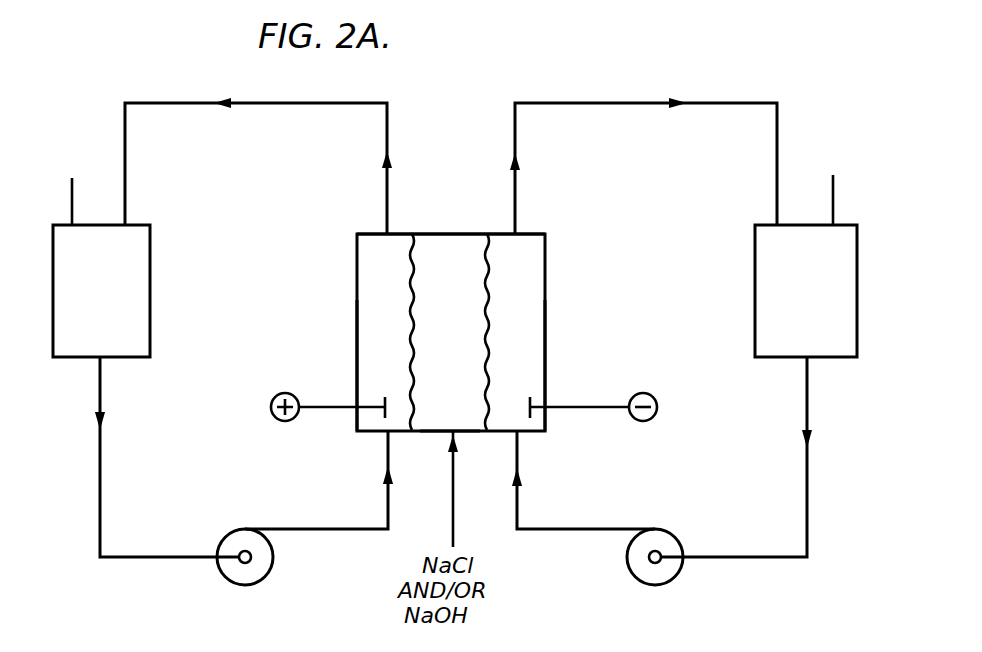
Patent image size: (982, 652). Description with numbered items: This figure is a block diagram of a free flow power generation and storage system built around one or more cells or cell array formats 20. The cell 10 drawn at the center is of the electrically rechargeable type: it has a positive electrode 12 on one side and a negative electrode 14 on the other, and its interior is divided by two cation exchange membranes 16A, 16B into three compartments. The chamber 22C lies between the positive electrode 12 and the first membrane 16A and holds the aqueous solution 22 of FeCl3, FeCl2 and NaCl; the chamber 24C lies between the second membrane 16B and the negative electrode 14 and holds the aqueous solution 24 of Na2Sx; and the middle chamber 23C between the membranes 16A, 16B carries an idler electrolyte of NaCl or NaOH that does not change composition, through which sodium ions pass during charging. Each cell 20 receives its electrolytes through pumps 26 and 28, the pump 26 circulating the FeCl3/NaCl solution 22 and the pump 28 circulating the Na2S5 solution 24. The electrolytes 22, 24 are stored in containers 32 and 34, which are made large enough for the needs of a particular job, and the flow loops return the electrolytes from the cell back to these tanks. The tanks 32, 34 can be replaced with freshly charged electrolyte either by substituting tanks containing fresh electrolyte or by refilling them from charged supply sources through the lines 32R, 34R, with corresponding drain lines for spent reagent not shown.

The cell 10 is at (557, 382).
The positive electrode 12 is at (318, 409).
The negative electrode 14 is at (578, 409).
The cation exchange membrane 16A is at (412, 323).
The cation exchange membrane 16B is at (487, 327).
The cell or cell array format 20 is at (448, 212).
The aqueous solution of FeCl3, FeCl2 and NaCl 22 is at (388, 498).
The chamber 22C is at (391, 373).
The middle chamber 23C is at (452, 373).
The aqueous solution of Na2Sx 24 is at (520, 502).
The chamber 24C is at (517, 373).
The pump 26 is at (232, 537).
The pump 28 is at (668, 538).
The container 32 is at (150, 305).
The line 32R is at (72, 190).
The container 34 is at (757, 293).
The line 34R is at (856, 168).